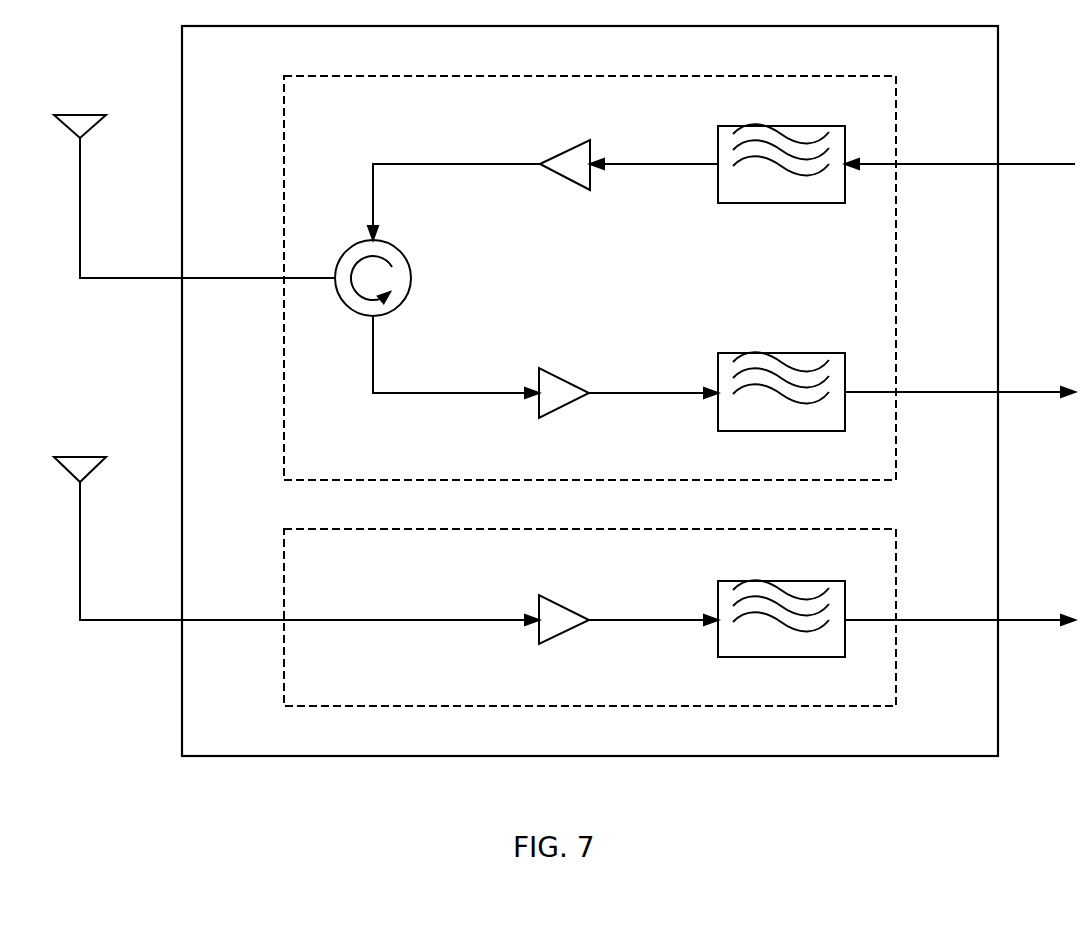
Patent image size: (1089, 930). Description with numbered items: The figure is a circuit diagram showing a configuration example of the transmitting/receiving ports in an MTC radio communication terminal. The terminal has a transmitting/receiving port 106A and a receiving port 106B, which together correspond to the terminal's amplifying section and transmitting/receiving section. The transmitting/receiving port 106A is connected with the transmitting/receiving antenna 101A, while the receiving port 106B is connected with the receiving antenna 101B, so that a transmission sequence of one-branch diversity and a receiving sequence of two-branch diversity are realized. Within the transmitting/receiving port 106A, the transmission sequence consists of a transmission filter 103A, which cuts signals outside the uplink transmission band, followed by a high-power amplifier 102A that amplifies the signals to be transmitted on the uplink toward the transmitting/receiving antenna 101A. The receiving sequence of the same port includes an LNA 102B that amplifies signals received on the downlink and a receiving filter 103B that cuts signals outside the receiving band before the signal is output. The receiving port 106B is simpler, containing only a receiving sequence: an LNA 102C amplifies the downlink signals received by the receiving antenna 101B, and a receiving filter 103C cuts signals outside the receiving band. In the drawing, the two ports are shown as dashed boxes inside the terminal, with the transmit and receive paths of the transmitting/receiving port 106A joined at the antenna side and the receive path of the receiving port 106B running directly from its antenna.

The transmitting/receiving antenna 101A is at (81, 113).
The receiving antenna 101B is at (81, 453).
The high-power amplifier 102A is at (566, 150).
The LNA 102B is at (560, 377).
The LNA 102C is at (560, 605).
The transmission filter 103A is at (797, 126).
The receiving filter 103B is at (797, 353).
The receiving filter 103C is at (797, 581).
The transmitting/receiving port 106A is at (665, 56).
The receiving port 106B is at (660, 513).